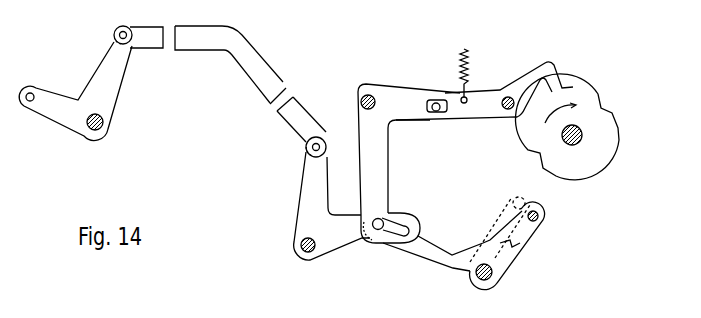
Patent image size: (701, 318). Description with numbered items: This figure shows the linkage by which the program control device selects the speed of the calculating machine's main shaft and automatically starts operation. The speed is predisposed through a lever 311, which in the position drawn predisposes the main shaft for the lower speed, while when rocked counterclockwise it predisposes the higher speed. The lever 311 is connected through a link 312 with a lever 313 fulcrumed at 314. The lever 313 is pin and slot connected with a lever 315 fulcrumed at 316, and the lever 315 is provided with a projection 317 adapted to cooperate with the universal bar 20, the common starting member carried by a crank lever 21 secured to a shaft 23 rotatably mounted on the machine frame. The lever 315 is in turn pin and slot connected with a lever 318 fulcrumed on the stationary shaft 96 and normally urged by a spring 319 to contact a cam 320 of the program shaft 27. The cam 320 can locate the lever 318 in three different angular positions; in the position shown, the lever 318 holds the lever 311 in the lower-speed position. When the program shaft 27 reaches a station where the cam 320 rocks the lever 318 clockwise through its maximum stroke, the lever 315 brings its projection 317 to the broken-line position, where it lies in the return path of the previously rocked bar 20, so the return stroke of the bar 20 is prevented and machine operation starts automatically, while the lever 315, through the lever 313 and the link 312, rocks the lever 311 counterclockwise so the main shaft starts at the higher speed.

The lever 311 is at (118, 92).
The link 312 is at (289, 89).
The lever 313 is at (302, 208).
The fulcrum 314 is at (315, 249).
The lever 315 is at (380, 166).
The fulcrum 316 is at (373, 96).
The projection 317 is at (497, 245).
The lever 318 is at (481, 94).
The spring 319 is at (469, 60).
The stationary shaft 96 is at (506, 110).
The cam 320 is at (608, 123).
The shaft 27 is at (582, 141).
The universal bar 20 is at (542, 219).
The crank lever 21 is at (512, 260).
The shaft 23 is at (493, 274).